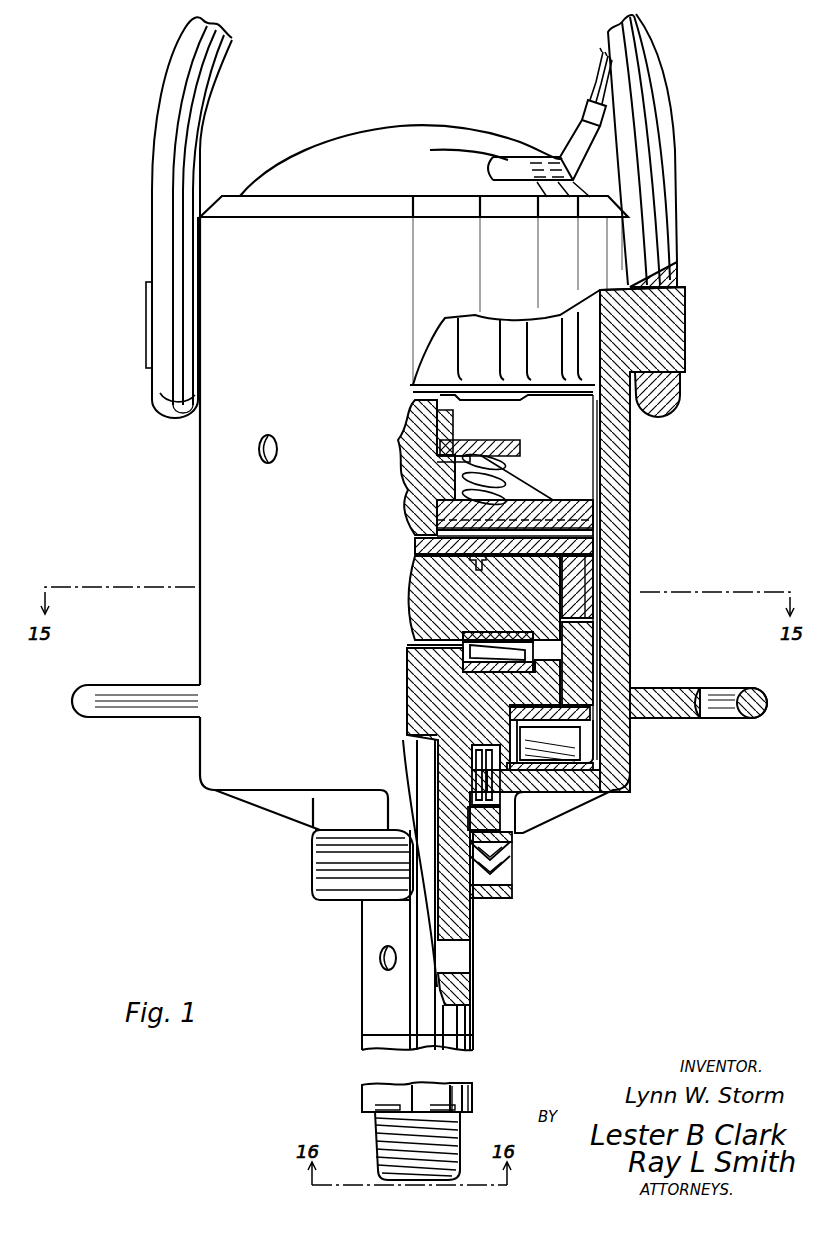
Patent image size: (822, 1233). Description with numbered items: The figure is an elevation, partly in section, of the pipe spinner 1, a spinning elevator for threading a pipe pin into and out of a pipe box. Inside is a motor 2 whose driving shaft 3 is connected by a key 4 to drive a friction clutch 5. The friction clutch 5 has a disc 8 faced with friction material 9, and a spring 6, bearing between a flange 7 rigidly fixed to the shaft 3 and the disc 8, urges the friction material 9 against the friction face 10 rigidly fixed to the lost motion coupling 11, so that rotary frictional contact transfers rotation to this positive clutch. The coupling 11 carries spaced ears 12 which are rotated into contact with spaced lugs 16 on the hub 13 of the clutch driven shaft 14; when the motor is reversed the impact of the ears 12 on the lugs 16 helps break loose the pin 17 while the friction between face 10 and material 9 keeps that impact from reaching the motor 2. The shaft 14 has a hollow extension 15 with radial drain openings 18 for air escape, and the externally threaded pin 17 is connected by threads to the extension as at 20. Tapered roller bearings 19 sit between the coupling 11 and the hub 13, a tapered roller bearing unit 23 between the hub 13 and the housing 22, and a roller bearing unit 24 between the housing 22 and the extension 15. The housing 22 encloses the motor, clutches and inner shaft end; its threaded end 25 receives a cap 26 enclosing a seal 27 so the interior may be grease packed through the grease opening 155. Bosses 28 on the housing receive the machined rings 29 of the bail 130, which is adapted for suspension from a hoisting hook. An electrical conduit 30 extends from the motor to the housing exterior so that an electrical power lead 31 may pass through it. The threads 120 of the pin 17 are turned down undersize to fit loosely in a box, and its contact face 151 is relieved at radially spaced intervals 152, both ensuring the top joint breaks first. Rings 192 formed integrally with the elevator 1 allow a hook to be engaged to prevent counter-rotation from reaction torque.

The pipe spinner 1 is at (200, 487).
The motor 2 is at (483, 342).
The driving shaft 3 is at (425, 420).
The key 4 is at (455, 455).
The friction clutch 5 is at (560, 500).
The spring 6 is at (536, 485).
The flange 7 is at (515, 440).
The disc 8 is at (573, 510).
The friction material 9 is at (593, 530).
The friction face 10 is at (415, 550).
The lost motion coupling 11 is at (440, 588).
The ears 12 is at (578, 590).
The hub 13 is at (585, 648).
The clutch driven shaft 14 is at (432, 690).
The hollow extension 15 is at (372, 933).
The lugs 16 is at (598, 556).
The pin 17 is at (368, 1092).
The radial drain openings 18 is at (383, 970).
The tapered roller bearings 19 is at (470, 642).
The threaded connection 20 is at (385, 1035).
The housing 22 is at (625, 503).
The tapered roller bearing unit 23 is at (597, 766).
The roller bearing unit 24 is at (518, 800).
The threaded end 25 is at (512, 848).
The cap 26 is at (486, 898).
The seal 27 is at (513, 866).
The bosses or ears 28 is at (150, 340).
The machined rings 29 is at (165, 400).
The electrical conduit 30 is at (566, 152).
The electrical power lead 31 is at (587, 112).
The threads 120 is at (383, 1158).
The bail 130 is at (160, 215).
The contact face 151 is at (472, 1105).
The radially spaced intervals 152 is at (462, 1090).
The grease opening 155 is at (280, 447).
The rings 192 is at (705, 705).